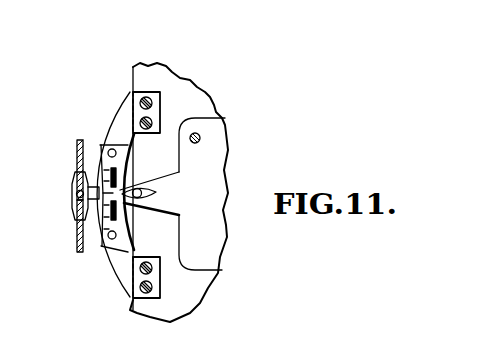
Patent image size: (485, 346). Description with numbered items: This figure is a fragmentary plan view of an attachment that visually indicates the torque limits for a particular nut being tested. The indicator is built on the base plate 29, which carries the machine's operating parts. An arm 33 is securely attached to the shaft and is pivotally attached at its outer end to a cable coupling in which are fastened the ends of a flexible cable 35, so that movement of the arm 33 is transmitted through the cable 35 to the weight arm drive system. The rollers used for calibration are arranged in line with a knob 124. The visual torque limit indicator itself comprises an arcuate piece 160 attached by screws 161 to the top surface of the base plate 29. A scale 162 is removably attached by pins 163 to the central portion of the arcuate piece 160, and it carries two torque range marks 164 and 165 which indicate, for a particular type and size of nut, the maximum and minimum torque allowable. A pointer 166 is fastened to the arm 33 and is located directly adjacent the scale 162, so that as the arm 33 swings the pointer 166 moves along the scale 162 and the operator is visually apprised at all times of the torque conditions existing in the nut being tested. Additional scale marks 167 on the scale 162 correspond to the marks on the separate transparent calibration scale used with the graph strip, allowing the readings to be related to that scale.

The base plate 29 is at (197, 86).
The arm 33 is at (222, 130).
The flexible cable 35 is at (76, 150).
The knob 124 is at (156, 192).
The arcuate piece 160 is at (110, 118).
The screws 161 is at (133, 88).
The scale 162 is at (77, 228).
The pins 163 is at (105, 247).
The torque range mark 164 is at (116, 173).
The torque range mark 165 is at (125, 212).
The pointer 166 is at (116, 183).
The additional scale marks 167 is at (86, 185).